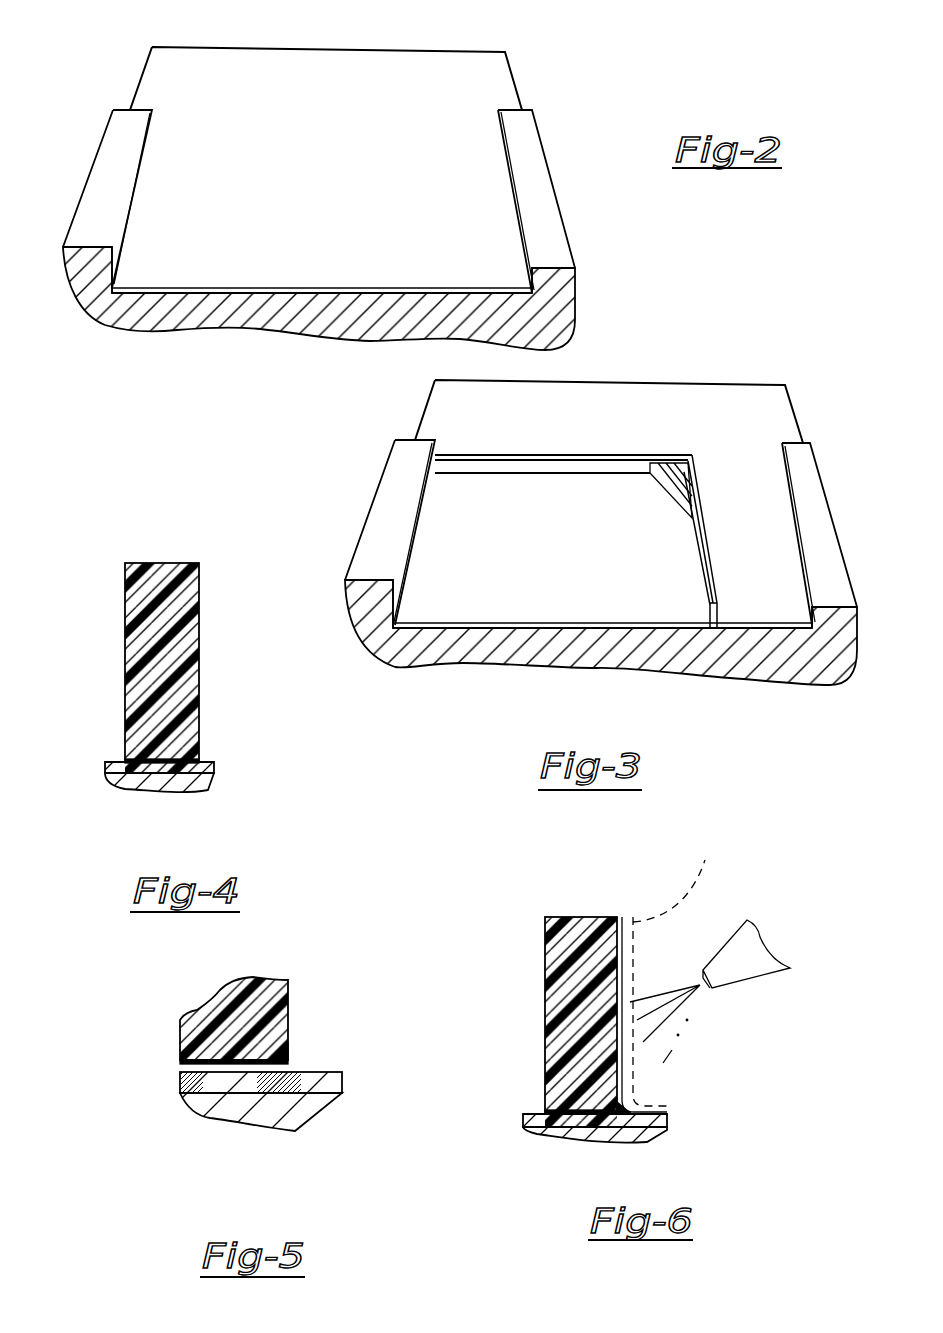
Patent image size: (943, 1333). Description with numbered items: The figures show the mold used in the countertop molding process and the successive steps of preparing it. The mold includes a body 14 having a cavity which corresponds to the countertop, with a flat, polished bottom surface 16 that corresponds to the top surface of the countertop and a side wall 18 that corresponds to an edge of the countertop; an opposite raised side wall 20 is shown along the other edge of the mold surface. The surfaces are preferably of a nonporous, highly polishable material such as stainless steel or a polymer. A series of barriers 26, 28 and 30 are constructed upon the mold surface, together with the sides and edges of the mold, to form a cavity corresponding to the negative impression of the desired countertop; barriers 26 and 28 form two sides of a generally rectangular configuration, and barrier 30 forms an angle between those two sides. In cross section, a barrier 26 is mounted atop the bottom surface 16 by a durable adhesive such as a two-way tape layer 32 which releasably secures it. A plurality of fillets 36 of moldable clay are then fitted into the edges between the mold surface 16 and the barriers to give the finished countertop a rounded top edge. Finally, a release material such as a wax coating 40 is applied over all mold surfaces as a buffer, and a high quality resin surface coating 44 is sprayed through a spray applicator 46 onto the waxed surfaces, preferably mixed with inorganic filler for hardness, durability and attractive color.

In FIG. 2, the body 14 is at (290, 333).
In FIG. 4, the body 14 is at (210, 786).
In FIG. 5, the body 14 is at (280, 1122).
In FIG. 6, the body 14 is at (573, 1133).
In FIG. 2, the bottom surface 16 is at (213, 62).
In FIG. 4, the bottom surface 16 is at (215, 767).
In FIG. 5, the bottom surface 16 is at (217, 1083).
In FIG. 6, the bottom surface 16 is at (533, 1122).
In FIG. 2, the side wall 18 is at (115, 150).
In FIG. 3, the side wall 18 is at (388, 490).
In FIG. 2, the right rail 20 is at (523, 137).
In FIG. 3, the right rail 20 is at (803, 460).
In FIG. 3, the barrier 26 is at (575, 455).
In FIG. 4, the barrier 26 is at (200, 582).
In FIG. 5, the barrier 26 is at (207, 1007).
In FIG. 6, the barrier 26 is at (545, 955).
In FIG. 3, the barrier 28 is at (708, 543).
In FIG. 3, the barrier 30 is at (673, 477).
In FIG. 4, the two-way tape layer 32 is at (213, 760).
In FIG. 5, the two-way tape layer 32 is at (183, 1065).
In FIG. 6, the two-way tape layer 32 is at (543, 1110).
In FIG. 5, the fillets 36 is at (295, 1068).
In FIG. 6, the fillets 36 is at (640, 1102).
In FIG. 6, the wax coating 40 is at (673, 977).
In FIG. 6, the resin surface coating 44 is at (663, 997).
In FIG. 6, the spray applicator 46 is at (752, 955).